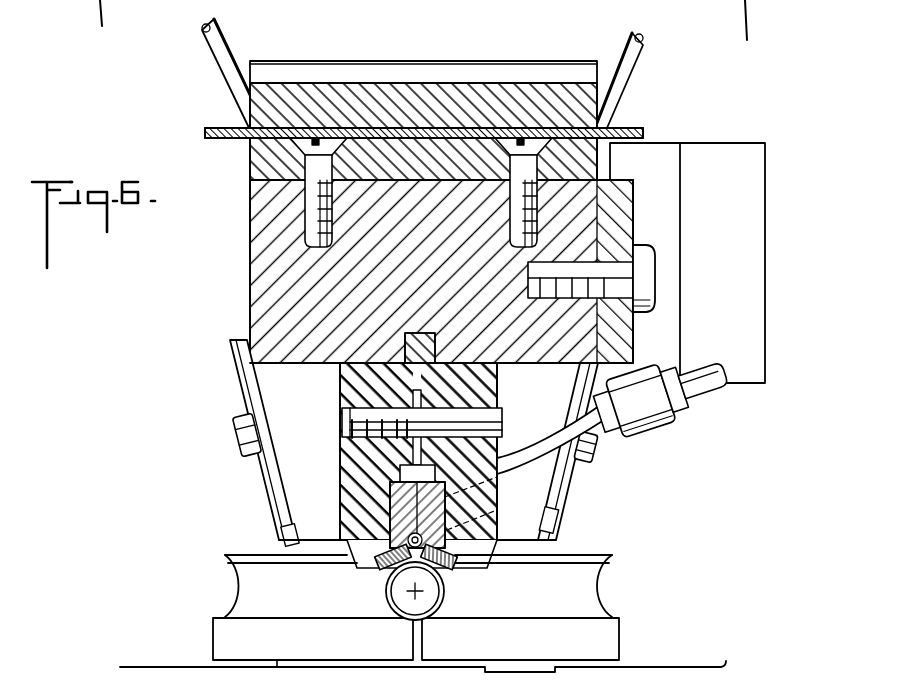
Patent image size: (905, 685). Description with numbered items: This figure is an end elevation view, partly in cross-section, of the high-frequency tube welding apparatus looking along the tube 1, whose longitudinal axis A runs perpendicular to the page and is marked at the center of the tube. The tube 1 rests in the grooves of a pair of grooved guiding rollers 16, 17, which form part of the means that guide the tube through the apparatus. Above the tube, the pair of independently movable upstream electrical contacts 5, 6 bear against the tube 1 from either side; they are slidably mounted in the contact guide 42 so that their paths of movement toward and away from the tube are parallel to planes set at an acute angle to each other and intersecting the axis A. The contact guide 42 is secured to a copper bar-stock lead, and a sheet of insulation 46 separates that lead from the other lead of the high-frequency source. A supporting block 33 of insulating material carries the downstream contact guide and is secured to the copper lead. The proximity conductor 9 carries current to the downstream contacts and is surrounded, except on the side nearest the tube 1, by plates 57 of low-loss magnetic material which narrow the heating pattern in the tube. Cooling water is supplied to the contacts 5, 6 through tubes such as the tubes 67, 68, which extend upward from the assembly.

The tube 1 is at (445, 603).
The upstream electrical contact 5 is at (344, 567).
The upstream electrical contact 6 is at (479, 562).
The proximity conductor 9 is at (447, 575).
The grooved guiding roller 16 is at (213, 625).
The grooved guiding roller 17 is at (608, 637).
The supporting block 33 is at (252, 260).
The contact guide 42 is at (538, 485).
The sheet of insulation 46 is at (635, 130).
The plates of low-loss magnetic material 57 is at (480, 497).
The cooling water tube 67 is at (220, 64).
The cooling water tube 68 is at (632, 62).
The axis of the tube A is at (408, 593).